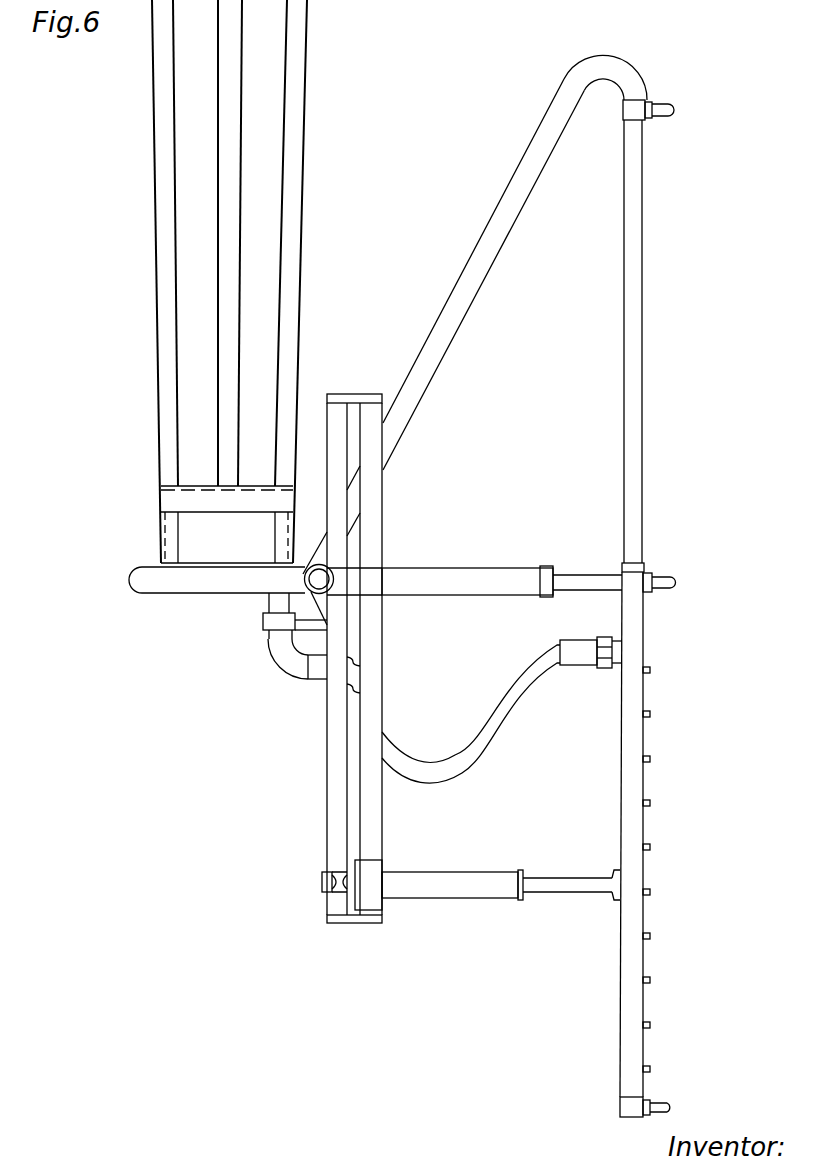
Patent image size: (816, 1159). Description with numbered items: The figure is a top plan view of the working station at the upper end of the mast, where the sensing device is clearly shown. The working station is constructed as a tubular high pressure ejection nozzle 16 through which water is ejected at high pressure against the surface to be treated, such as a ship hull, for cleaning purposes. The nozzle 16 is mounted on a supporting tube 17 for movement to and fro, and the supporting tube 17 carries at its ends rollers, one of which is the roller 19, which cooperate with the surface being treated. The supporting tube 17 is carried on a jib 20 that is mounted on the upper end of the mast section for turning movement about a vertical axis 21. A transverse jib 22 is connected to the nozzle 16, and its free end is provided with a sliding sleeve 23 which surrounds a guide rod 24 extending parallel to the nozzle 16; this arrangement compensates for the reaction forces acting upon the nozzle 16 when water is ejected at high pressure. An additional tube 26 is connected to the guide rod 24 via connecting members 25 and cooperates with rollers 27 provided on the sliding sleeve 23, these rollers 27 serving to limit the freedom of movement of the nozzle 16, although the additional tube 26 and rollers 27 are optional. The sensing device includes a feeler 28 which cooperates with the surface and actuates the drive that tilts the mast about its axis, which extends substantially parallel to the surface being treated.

The tubular high pressure ejection nozzle 16 is at (645, 827).
The supporting tube 17 is at (646, 480).
The roller 19 is at (662, 115).
The jib 20 is at (531, 145).
The vertical axis 21 is at (313, 575).
The transverse jib 22 is at (481, 902).
The sliding sleeve 23 is at (375, 910).
The guide rod 24 is at (385, 790).
The connecting member 25 is at (347, 925).
The additional tube 26 is at (327, 815).
The roller 27 is at (330, 900).
The feeler 28 is at (655, 573).